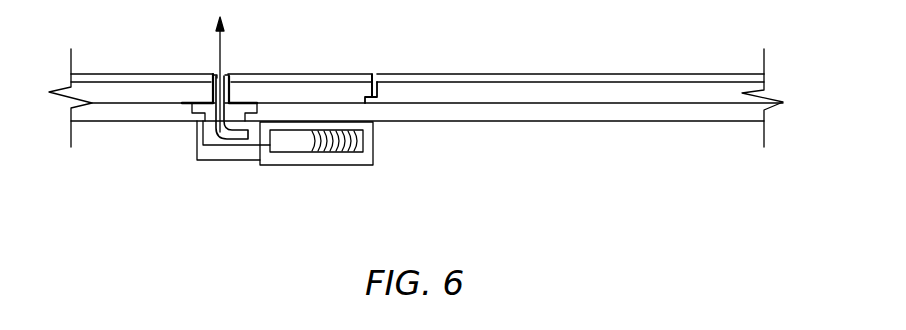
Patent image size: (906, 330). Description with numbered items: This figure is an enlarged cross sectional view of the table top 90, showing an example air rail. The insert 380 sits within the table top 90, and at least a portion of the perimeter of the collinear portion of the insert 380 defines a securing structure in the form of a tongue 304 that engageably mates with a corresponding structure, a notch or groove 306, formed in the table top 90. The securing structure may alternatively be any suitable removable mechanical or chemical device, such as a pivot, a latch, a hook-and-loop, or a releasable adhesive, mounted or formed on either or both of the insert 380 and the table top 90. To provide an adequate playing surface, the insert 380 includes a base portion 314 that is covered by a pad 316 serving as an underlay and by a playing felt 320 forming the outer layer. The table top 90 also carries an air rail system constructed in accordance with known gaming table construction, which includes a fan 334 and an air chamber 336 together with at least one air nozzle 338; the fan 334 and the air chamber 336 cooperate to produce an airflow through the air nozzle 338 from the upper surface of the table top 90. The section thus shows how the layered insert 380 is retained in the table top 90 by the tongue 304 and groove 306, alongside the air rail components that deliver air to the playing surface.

The table top 90 is at (708, 115).
The tongue 304 is at (366, 104).
The notch or groove 306 is at (374, 78).
The base portion 314 is at (537, 92).
The pad 316 is at (451, 75).
The playing felt 320 is at (623, 80).
The fan 334 is at (359, 165).
The air chamber 336 is at (218, 146).
The air nozzle 338 is at (226, 75).
The insert 380 is at (687, 93).